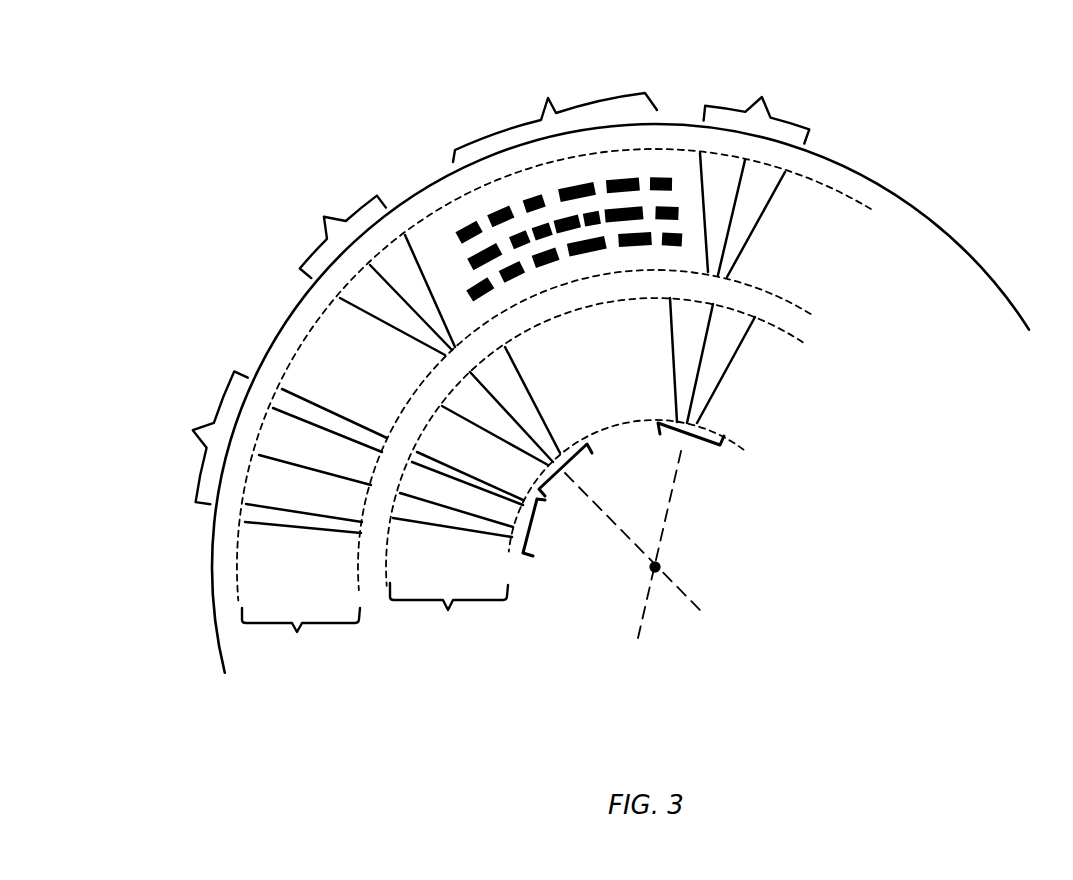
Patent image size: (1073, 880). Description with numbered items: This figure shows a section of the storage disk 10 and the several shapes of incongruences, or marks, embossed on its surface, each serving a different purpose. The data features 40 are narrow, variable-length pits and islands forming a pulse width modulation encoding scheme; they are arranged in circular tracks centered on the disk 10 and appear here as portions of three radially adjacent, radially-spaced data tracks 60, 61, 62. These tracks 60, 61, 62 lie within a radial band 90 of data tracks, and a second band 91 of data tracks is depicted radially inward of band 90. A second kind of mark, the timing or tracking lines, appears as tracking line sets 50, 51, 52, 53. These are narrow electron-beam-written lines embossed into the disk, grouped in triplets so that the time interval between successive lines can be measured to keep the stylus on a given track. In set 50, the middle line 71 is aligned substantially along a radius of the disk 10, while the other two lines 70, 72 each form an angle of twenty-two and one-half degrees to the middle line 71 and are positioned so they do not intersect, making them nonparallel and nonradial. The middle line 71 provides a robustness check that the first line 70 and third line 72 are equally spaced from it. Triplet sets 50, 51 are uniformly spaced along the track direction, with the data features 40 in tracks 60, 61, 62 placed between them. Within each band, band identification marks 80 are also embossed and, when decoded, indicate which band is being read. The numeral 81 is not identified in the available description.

The storage disk 10 is at (955, 270).
The data features 40 is at (548, 98).
The tracking line set 50 is at (324, 215).
The tracking line set 51 is at (762, 98).
The tracking line set 52 is at (570, 480).
The tracking line set 53 is at (685, 440).
The data track 60 is at (673, 187).
The data track 61 is at (679, 210).
The data track 62 is at (683, 240).
The first line 70 is at (417, 342).
The middle line 71 is at (408, 307).
The third line 72 is at (423, 263).
The band identification marks 80 is at (193, 430).
The sensor window 81 is at (535, 533).
The radial band of data tracks 90 is at (298, 633).
The second band of data tracks 91 is at (448, 612).